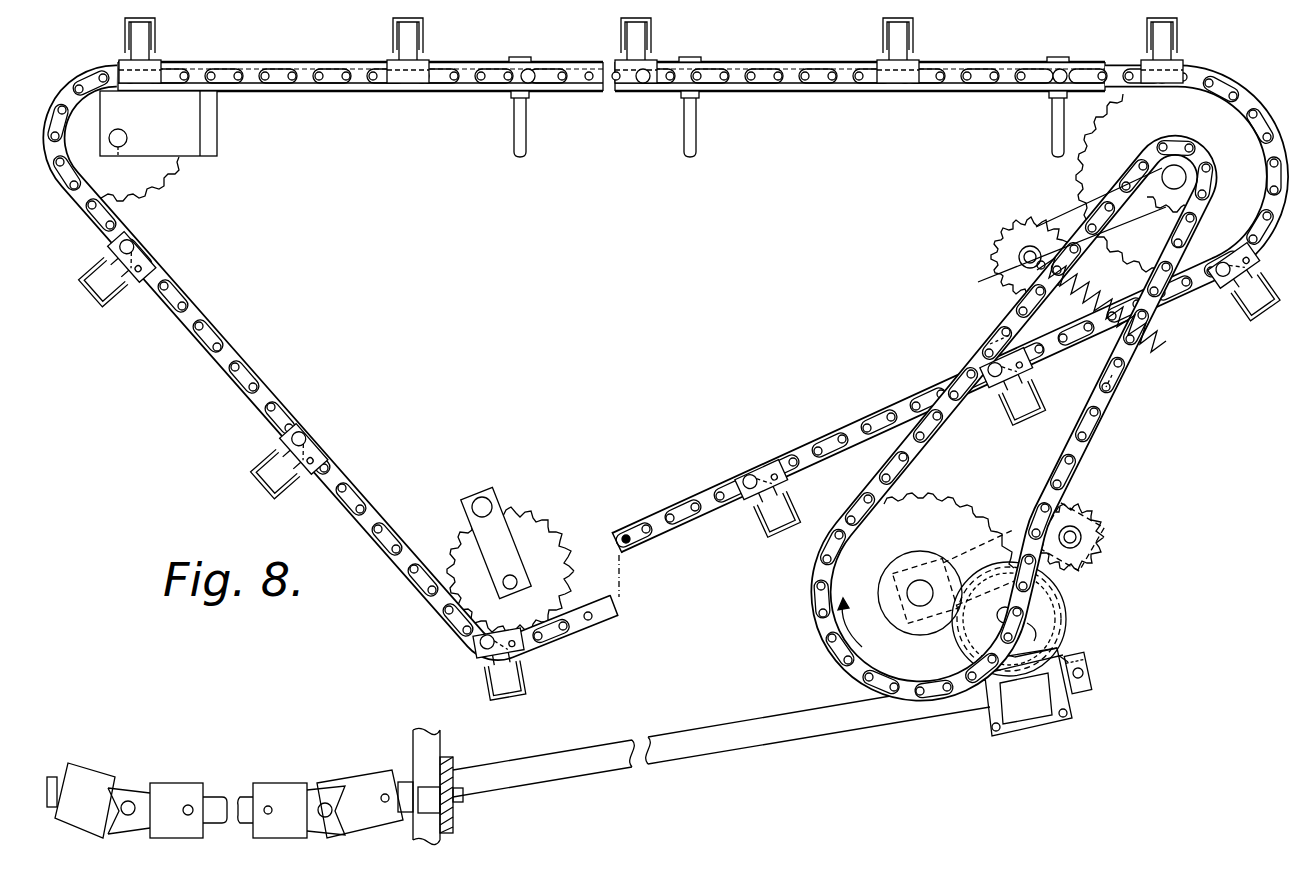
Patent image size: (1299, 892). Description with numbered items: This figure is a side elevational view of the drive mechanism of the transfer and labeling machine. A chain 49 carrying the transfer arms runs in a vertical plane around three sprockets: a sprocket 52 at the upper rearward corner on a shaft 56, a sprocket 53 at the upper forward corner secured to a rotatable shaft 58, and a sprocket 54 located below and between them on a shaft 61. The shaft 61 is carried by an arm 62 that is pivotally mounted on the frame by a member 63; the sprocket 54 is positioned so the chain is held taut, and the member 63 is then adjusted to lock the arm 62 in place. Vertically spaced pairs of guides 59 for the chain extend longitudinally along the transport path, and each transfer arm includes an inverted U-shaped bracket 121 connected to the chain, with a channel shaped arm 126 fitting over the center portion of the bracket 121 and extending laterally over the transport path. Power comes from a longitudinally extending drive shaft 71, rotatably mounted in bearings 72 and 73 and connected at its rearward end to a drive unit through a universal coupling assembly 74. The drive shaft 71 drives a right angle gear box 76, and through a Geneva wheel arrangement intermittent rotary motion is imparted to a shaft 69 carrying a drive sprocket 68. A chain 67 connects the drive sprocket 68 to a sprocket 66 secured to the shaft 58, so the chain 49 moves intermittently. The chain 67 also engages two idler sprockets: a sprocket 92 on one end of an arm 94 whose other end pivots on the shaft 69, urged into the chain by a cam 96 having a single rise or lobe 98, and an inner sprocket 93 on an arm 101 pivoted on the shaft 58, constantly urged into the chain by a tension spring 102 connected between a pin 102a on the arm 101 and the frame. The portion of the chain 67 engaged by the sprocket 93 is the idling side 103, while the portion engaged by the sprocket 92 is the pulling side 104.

The chain 49 is at (358, 484).
The sprocket 52 is at (153, 186).
The sprocket 53 is at (1067, 178).
The sprocket 54 is at (548, 540).
The shaft 56 is at (122, 136).
The shaft 58 is at (1174, 170).
The guides 59 is at (572, 64).
The shaft 61 is at (517, 582).
The arm 62 is at (500, 515).
The member 63 is at (482, 497).
The sprocket 66 is at (1188, 187).
The chain 67 is at (1088, 447).
The drive sprocket 68 is at (847, 579).
The shaft 69 is at (918, 580).
The drive shaft 71 is at (707, 742).
The bearing 72 is at (1055, 720).
The bearing 73 is at (413, 772).
The universal coupling assembly 74 is at (244, 773).
The right angle gear box 76 is at (1090, 660).
The idler sprocket 92 is at (1105, 537).
The idler sprocket 93 is at (1018, 259).
The arm 94 is at (1012, 525).
The cam 96 is at (1052, 610).
The rise or lobe 98 is at (1058, 642).
The arm 101 is at (1036, 222).
The tension spring 102 is at (1165, 345).
The pin 102a is at (1030, 268).
The idling side 103 is at (1000, 340).
The pulling side 104 is at (1113, 385).
The inverted U-shaped bracket 121 is at (622, 32).
The channel shaped arm 126 is at (652, 38).